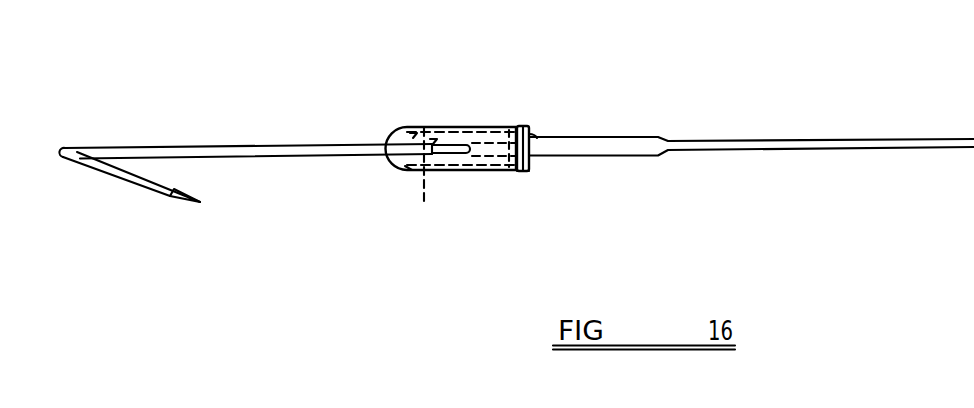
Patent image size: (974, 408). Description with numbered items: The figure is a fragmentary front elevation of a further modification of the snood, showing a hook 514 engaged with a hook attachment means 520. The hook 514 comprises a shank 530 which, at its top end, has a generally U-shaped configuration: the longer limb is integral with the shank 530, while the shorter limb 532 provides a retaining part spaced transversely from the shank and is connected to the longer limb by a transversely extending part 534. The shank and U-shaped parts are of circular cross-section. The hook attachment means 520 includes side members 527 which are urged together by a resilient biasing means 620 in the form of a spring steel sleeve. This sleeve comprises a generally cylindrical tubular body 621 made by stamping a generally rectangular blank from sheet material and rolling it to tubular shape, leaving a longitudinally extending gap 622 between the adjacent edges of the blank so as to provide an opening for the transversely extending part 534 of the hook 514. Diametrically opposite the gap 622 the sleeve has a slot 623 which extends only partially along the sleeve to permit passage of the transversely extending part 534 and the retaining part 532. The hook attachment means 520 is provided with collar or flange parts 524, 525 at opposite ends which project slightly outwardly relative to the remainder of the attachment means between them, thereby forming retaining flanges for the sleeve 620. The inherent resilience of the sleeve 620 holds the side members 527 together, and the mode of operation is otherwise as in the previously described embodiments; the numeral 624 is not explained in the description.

The hook 514 is at (150, 157).
The shank 530 is at (270, 147).
The collar or flange part 524 is at (395, 128).
The side members 527 is at (421, 128).
The transversely extending part 534 is at (452, 128).
The resilient biasing means 620 is at (504, 128).
The hook attachment means 520 is at (630, 137).
The shorter limb 532 is at (412, 172).
The cylindrical tubular body 621 is at (490, 172).
The slot 623 is at (466, 156).
The longitudinally extending gap 622 is at (520, 172).
The collar or flange part 525 is at (525, 157).
The needle base 624 is at (533, 140).